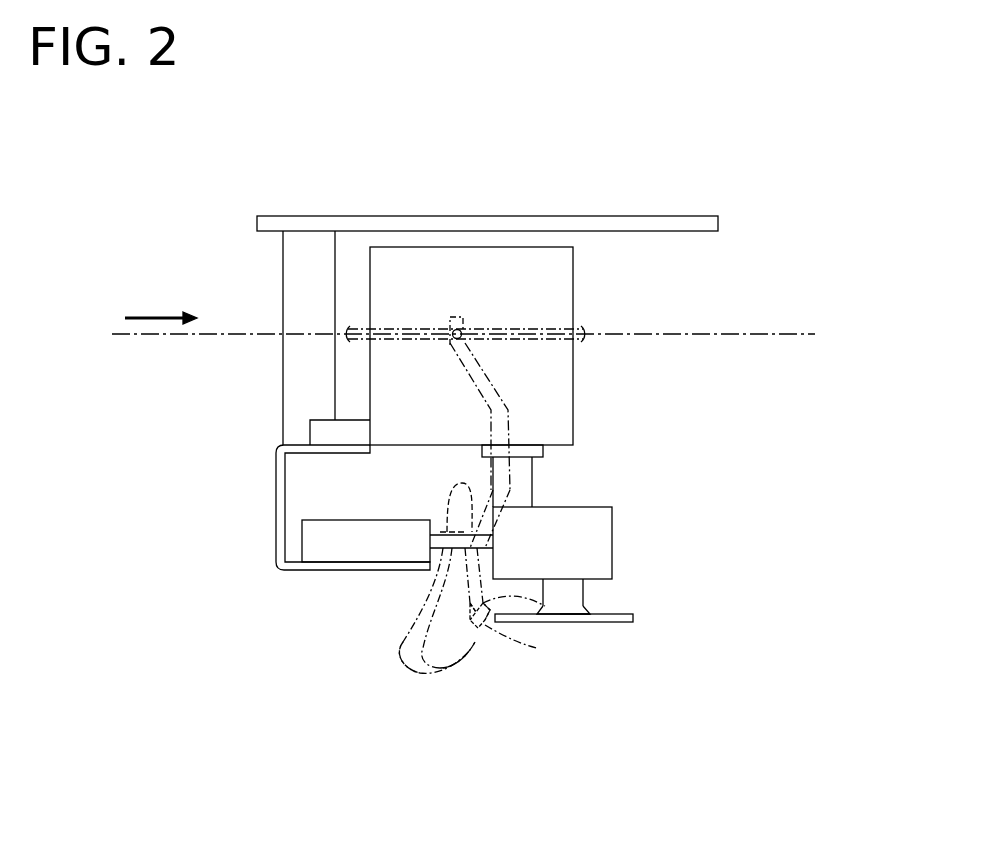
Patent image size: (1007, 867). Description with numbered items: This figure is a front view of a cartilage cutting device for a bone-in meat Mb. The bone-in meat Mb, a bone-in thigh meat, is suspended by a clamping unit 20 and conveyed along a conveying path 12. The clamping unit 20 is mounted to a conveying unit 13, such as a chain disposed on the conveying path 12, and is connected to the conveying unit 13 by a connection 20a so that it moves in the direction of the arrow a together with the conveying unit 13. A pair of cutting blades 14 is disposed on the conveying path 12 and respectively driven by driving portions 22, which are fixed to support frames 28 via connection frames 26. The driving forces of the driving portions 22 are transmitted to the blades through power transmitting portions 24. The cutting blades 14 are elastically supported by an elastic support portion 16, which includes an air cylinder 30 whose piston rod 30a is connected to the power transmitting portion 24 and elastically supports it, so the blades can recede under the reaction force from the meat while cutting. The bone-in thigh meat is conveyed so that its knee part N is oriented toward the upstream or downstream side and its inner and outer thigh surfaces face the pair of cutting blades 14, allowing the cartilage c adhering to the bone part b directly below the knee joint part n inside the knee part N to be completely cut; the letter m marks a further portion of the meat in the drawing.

The conveying path 12 is at (745, 334).
The conveying unit 13 is at (553, 329).
The cutting blade 14 is at (610, 622).
The elastic support portion 16 is at (372, 583).
The clamping unit 20 is at (515, 470).
The connection 20a is at (458, 330).
The driving portion 22 is at (570, 373).
The power transmitting portion 24 is at (612, 540).
The connection frame 26 is at (287, 295).
The support frame 28 is at (402, 215).
The air cylinder 30 is at (357, 525).
The piston rod 30a is at (440, 535).
The bone-in meat Mb is at (394, 649).
The arrow a is at (156, 315).
The bone part b is at (433, 660).
The medium portion m is at (467, 665).
The cartilage c is at (473, 627).
The knee joint part n is at (485, 628).
The knee part N is at (575, 622).